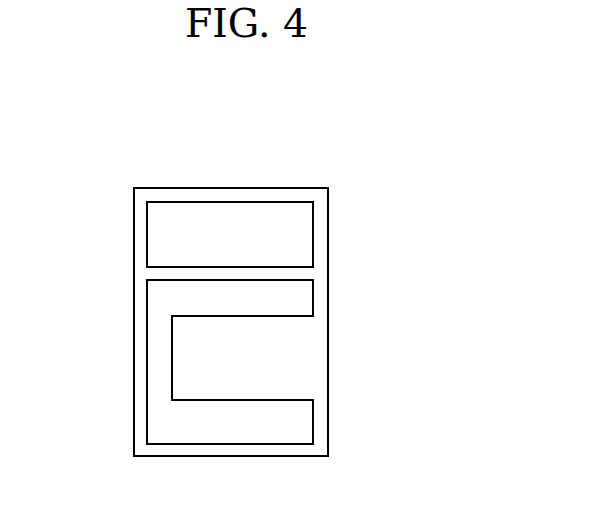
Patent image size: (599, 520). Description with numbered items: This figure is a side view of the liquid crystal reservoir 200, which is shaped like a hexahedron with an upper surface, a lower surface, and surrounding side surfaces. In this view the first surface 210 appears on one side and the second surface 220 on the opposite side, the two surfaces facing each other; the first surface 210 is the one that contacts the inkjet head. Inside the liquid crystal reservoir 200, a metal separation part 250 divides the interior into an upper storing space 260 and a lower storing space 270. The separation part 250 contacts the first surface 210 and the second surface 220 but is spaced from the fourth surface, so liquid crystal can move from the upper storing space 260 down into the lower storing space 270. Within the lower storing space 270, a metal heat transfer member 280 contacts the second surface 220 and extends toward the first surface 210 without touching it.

The liquid crystal reservoir 200 is at (242, 127).
The first surface 210 is at (134, 334).
The second surface 220 is at (328, 330).
The separation part 250 is at (198, 267).
The upper storing space 260 is at (267, 232).
The lower storing space 270 is at (268, 293).
The heat transfer member 280 is at (190, 362).